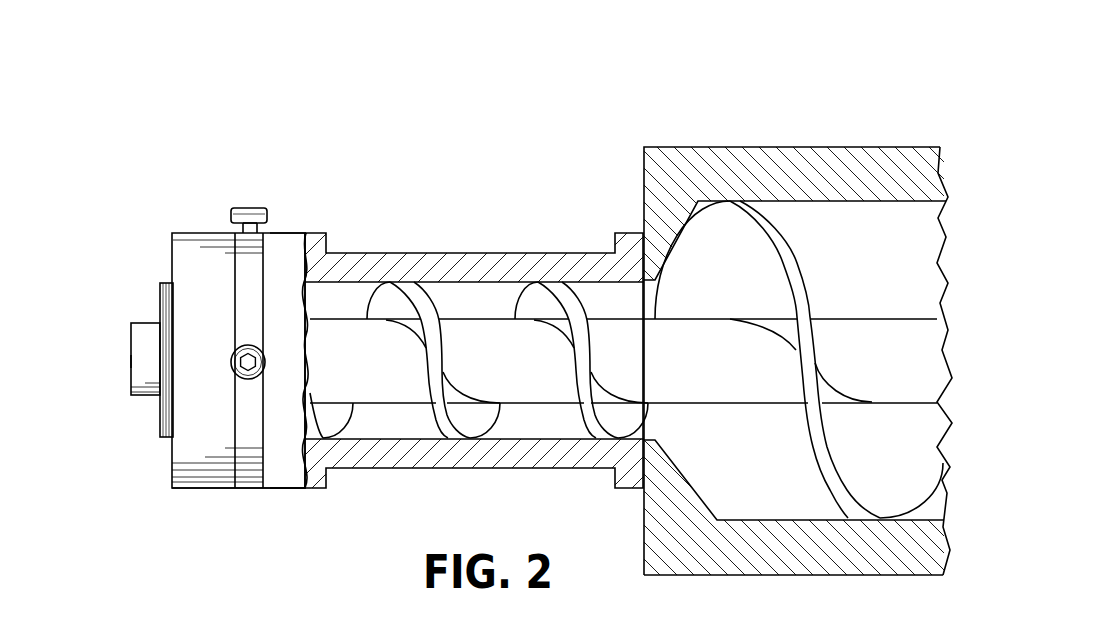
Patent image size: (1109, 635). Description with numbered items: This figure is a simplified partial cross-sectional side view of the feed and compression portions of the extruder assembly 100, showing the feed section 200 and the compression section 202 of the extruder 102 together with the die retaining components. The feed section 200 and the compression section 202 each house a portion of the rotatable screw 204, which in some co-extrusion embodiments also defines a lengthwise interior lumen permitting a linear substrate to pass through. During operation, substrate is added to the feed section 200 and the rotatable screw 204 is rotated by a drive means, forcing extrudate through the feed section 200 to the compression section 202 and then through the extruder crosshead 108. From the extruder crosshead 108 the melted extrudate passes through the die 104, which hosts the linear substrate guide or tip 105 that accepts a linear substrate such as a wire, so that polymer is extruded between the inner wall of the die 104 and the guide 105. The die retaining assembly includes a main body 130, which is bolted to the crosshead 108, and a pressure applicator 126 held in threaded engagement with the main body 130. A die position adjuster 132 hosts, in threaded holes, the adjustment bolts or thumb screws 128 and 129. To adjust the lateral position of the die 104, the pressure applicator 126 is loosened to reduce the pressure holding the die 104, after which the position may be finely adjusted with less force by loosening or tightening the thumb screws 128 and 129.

The extruder assembly 100 is at (413, 92).
The extruder 102 is at (492, 162).
The die 104 is at (147, 395).
The linear substrate guide 105 is at (128, 361).
The extruder crosshead 108 is at (293, 232).
The pressure applicator 126 is at (160, 305).
The thumb screw 128 is at (232, 357).
The thumb screw 129 is at (250, 206).
The main body 130 is at (208, 232).
The die position adjuster 132 is at (244, 489).
The feed section 200 is at (803, 145).
The compression section 202 is at (480, 252).
The rotatable screw 204 is at (804, 272).